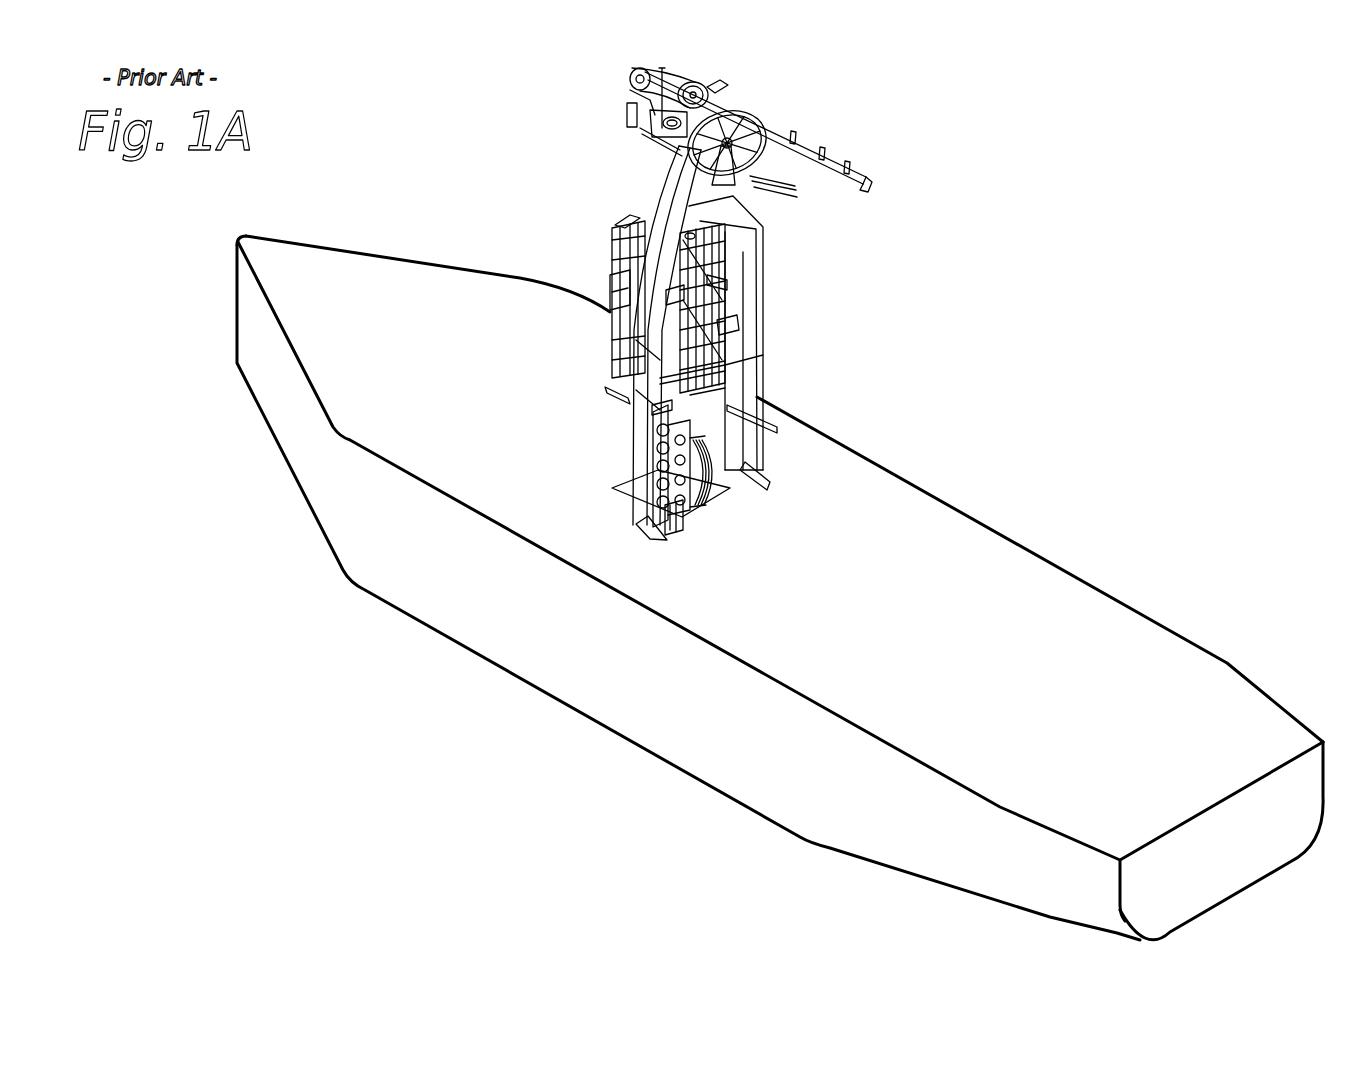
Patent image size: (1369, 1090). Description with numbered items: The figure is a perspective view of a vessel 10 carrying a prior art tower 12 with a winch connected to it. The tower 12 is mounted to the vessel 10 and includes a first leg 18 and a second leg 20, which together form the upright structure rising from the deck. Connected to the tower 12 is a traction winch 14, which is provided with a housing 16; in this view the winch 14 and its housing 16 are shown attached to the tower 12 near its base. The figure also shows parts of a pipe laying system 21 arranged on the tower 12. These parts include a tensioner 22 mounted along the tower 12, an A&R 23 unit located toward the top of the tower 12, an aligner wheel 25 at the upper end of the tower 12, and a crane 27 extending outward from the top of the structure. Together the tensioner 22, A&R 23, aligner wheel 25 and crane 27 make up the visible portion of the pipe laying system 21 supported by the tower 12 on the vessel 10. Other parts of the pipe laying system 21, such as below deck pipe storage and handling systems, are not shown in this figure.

The vessel 10 is at (988, 625).
The tower 12 is at (782, 248).
The winch 14 is at (712, 497).
The housing 16 is at (660, 423).
The first leg 18 is at (643, 377).
The second leg 20 is at (760, 316).
The pipe laying system 21 is at (932, 176).
The tensioner 22 is at (614, 264).
The A&R 23 is at (688, 70).
The aligner wheel 25 is at (765, 158).
The crane 27 is at (850, 148).